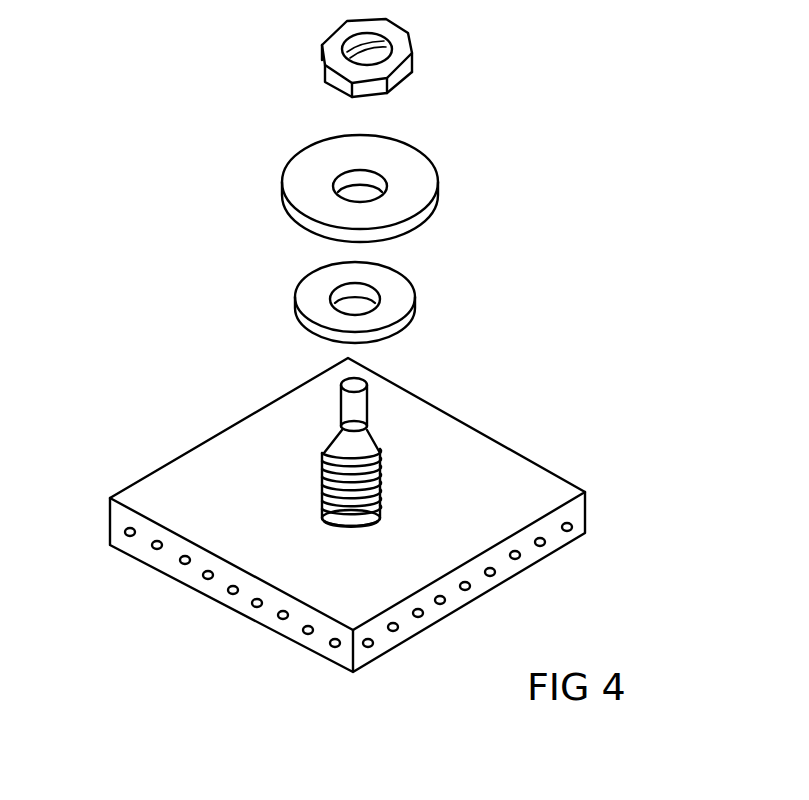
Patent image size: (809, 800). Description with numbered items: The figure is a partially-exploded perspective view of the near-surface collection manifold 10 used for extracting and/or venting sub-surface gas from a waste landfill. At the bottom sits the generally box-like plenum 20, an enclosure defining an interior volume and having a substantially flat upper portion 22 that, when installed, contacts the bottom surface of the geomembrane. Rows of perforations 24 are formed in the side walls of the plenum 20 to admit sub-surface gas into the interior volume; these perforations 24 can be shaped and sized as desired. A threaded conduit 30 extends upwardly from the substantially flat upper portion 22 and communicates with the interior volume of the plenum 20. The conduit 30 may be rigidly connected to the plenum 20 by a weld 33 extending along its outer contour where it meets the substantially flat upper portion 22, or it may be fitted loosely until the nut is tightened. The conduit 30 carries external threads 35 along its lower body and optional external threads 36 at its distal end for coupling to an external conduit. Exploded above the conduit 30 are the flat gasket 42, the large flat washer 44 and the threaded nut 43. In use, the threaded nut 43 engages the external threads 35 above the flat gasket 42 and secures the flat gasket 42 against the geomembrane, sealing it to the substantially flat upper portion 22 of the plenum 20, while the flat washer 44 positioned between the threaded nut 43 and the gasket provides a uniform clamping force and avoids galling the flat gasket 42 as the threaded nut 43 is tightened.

The collection manifold 10 is at (142, 133).
The plenum 20 is at (399, 532).
The substantially flat upper portion 22 is at (265, 509).
The perforations 24 is at (572, 529).
The threaded conduit 30 is at (317, 441).
The weld 33 is at (370, 523).
The external threads 35 is at (322, 478).
The external threads at distal end 36 is at (333, 408).
The flat gasket 42 is at (402, 302).
The threaded nut 43 is at (398, 43).
The flat washer 44 is at (428, 182).